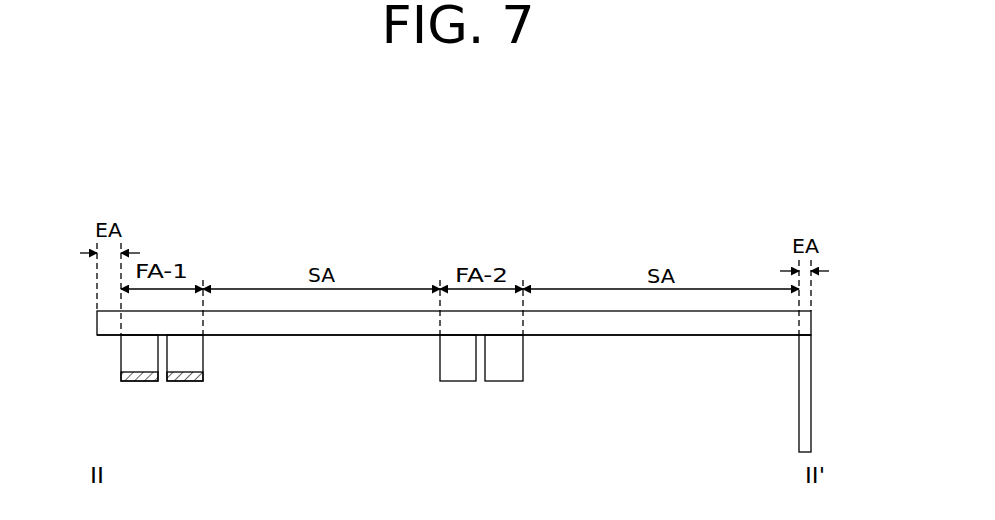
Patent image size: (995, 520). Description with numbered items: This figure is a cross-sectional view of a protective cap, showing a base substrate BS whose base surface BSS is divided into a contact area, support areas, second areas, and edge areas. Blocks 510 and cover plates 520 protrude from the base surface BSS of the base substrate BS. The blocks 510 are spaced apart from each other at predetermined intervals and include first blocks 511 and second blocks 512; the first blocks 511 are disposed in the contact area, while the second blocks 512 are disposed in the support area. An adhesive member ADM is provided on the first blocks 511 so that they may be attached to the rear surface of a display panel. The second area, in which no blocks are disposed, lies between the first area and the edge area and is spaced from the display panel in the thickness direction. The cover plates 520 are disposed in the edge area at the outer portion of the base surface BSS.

The base substrate BS is at (112, 321).
The base surface BSS is at (662, 336).
The blocks 510 is at (322, 414).
The first blocks 511 is at (172, 392).
The second blocks 512 is at (470, 392).
The cover plates 520 is at (806, 396).
The adhesive member ADM is at (145, 381).